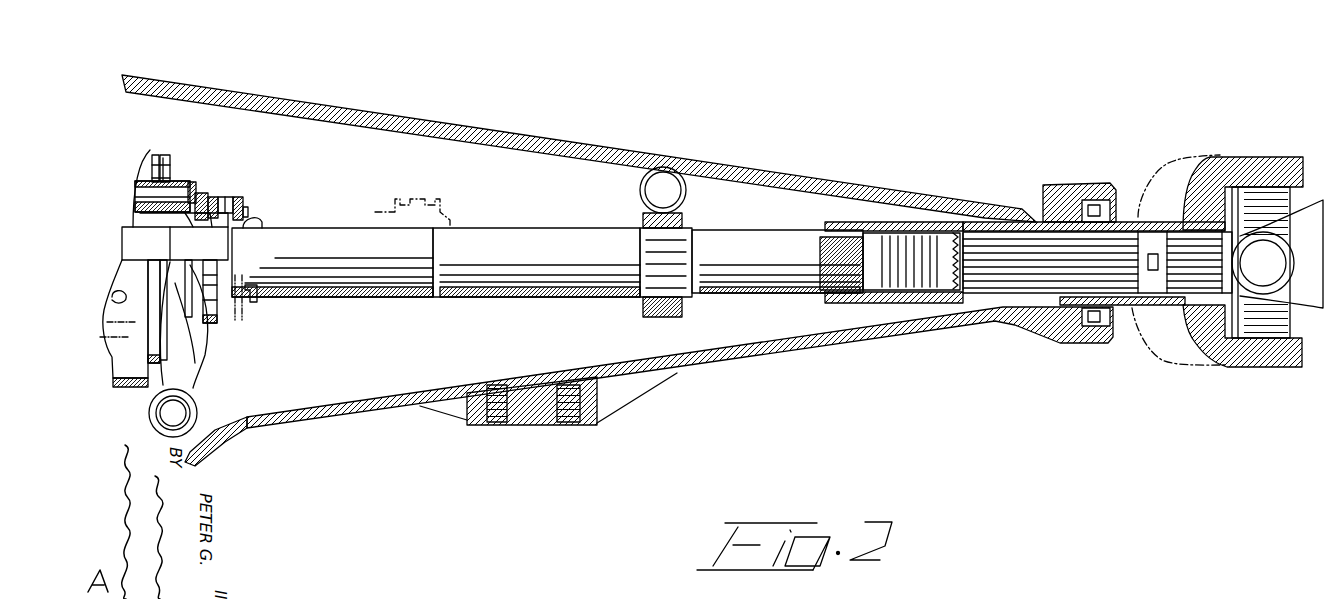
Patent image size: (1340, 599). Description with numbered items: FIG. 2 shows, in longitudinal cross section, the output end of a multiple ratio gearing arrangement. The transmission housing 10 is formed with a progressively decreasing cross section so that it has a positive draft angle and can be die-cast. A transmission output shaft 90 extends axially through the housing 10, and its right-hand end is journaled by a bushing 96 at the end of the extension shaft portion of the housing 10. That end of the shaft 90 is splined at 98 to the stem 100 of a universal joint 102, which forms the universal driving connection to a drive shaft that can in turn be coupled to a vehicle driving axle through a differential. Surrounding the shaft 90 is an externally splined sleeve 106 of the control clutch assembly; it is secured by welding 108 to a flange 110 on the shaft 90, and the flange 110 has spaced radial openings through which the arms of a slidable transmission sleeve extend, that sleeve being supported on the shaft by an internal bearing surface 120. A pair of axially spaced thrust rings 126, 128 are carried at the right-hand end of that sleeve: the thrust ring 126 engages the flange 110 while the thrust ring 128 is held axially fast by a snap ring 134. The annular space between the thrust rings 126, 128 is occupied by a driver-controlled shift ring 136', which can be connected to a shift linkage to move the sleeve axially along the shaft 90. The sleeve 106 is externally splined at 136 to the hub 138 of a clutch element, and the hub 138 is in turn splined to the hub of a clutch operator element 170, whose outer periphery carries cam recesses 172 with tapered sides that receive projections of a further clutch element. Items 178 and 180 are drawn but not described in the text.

The transmission housing 10 is at (563, 141).
The transmission output shaft 90 is at (276, 284).
The bushing 96 is at (1030, 220).
The spline 98 is at (977, 233).
The stem 100 is at (1052, 186).
The universal joint 102 is at (1206, 186).
The externally splined sleeve 106 is at (183, 213).
The welding 108 is at (212, 217).
The flange 110 is at (193, 220).
The internal bearing surface 120 is at (260, 229).
The thrust ring 126 is at (214, 197).
The thrust ring 128 is at (238, 193).
The snap ring 134 is at (245, 207).
The external spline 136 is at (150, 222).
The driver-controlled shift ring 136' is at (263, 183).
The hub 138 is at (145, 195).
The clutch operator element 170 is at (140, 182).
The cam recesses 172 is at (123, 317).
The screw 178 is at (169, 164).
The bolt 180 is at (165, 158).